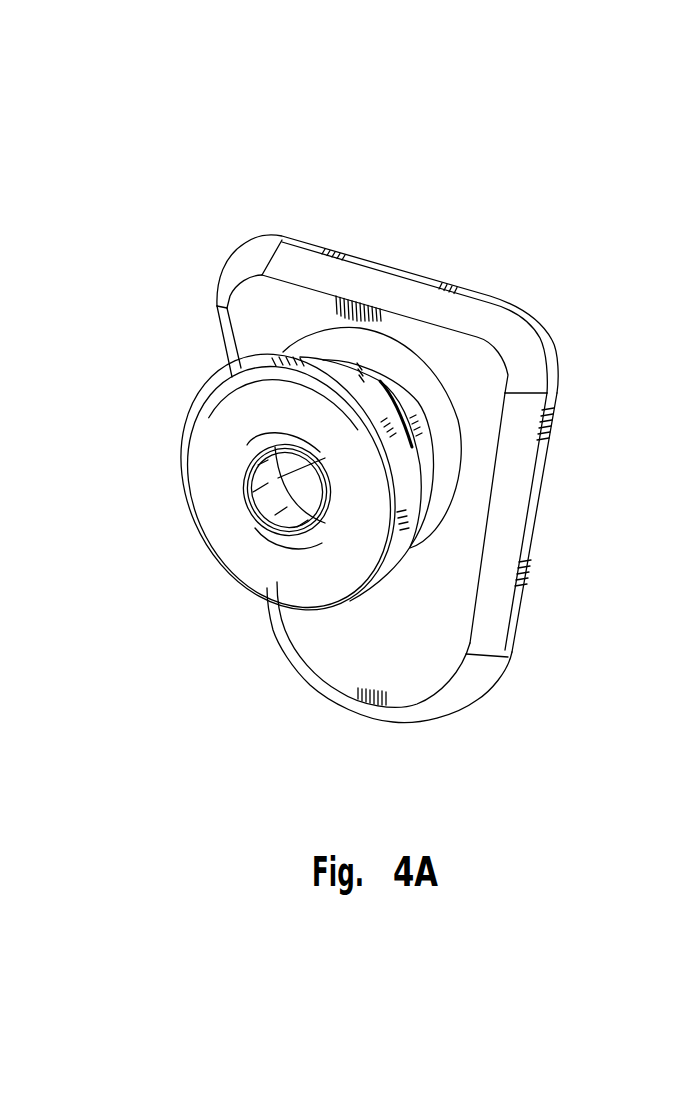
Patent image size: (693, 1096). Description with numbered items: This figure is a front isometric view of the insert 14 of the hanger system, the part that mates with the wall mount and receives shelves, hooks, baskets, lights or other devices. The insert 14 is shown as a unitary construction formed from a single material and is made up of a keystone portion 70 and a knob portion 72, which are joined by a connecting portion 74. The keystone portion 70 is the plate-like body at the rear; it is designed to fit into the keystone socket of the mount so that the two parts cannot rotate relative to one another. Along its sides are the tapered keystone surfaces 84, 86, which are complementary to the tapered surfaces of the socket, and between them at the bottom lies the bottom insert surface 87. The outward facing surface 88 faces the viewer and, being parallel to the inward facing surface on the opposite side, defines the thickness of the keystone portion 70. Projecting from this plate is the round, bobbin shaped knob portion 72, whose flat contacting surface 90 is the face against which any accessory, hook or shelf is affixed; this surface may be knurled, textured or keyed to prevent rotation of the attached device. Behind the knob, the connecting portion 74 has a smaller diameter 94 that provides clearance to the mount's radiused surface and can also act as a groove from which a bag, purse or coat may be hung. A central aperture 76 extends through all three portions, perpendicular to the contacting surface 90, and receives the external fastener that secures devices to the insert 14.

The insert 14 is at (262, 175).
The keystone portion 70 is at (547, 477).
The knob portion 72 is at (412, 560).
The connecting portion 74 is at (441, 490).
The central aperture 76 is at (268, 500).
The keystone surface 84 is at (222, 346).
The keystone surface 86 is at (548, 429).
The bottom insert surface 87 is at (377, 718).
The outward facing surface 88 is at (410, 654).
The contacting surface 90 is at (203, 453).
The smaller diameter 94 is at (400, 407).